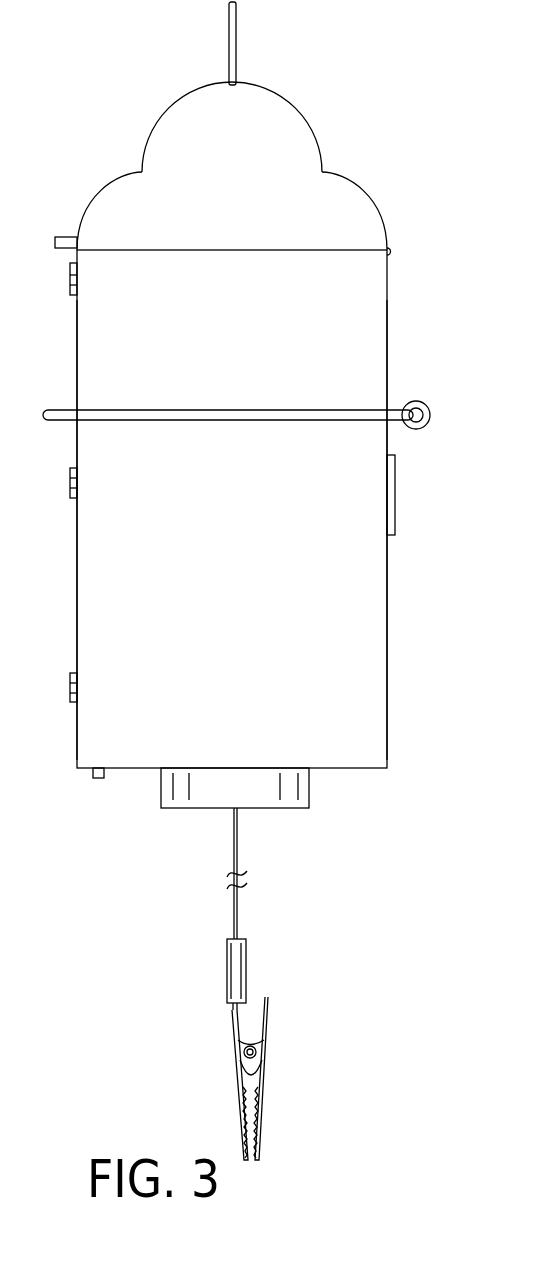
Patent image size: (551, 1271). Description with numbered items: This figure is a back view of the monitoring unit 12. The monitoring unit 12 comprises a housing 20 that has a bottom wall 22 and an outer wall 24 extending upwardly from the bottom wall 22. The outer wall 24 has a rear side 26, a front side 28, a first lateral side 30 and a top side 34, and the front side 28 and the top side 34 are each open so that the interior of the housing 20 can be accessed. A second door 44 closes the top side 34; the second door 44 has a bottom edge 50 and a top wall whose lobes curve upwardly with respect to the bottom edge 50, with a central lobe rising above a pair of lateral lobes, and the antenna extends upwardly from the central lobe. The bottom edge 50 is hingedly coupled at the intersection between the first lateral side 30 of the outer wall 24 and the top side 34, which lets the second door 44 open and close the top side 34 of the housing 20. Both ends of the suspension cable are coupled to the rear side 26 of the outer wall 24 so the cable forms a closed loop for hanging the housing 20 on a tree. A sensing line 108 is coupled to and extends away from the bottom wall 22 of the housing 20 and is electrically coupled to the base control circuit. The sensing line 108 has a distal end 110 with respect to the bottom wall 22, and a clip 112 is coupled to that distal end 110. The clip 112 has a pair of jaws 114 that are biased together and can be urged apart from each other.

The monitoring unit 12 is at (150, 104).
The housing 20 is at (387, 768).
The bottom wall 22 is at (129, 752).
The outer wall 24 is at (350, 700).
The rear side 26 is at (105, 590).
The front side 28 is at (38, 669).
The first lateral side 30 is at (10, 538).
The top side 34 is at (347, 250).
The second door 44 is at (108, 185).
The bottom edge 50 is at (325, 252).
The sensing line 108 is at (236, 918).
The distal end 110 is at (230, 1007).
The clip 112 is at (224, 1068).
The jaws 114 is at (242, 1118).